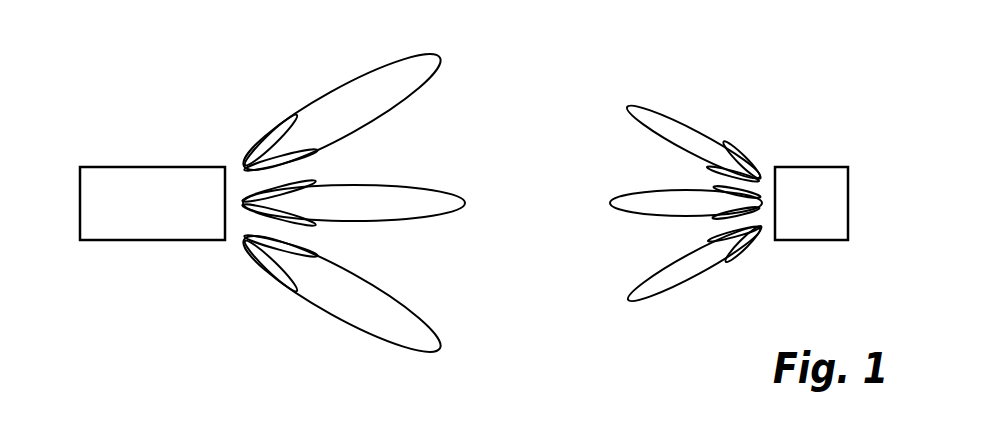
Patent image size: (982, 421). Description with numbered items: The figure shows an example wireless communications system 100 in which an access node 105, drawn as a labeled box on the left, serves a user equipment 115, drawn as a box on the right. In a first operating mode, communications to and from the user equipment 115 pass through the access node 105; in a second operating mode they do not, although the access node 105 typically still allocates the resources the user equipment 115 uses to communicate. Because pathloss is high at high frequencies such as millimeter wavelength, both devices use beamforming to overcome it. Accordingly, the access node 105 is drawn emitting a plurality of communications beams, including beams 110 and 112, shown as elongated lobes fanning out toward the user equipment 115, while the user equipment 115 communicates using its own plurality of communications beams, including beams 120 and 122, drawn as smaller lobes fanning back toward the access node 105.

The wireless communications system 100 is at (777, 45).
The access node 105 is at (98, 167).
The communications beam 110 is at (392, 185).
The communications beam 112 is at (392, 65).
The user equipment 115 is at (832, 167).
The communications beam 120 is at (648, 188).
The communications beam 122 is at (667, 115).